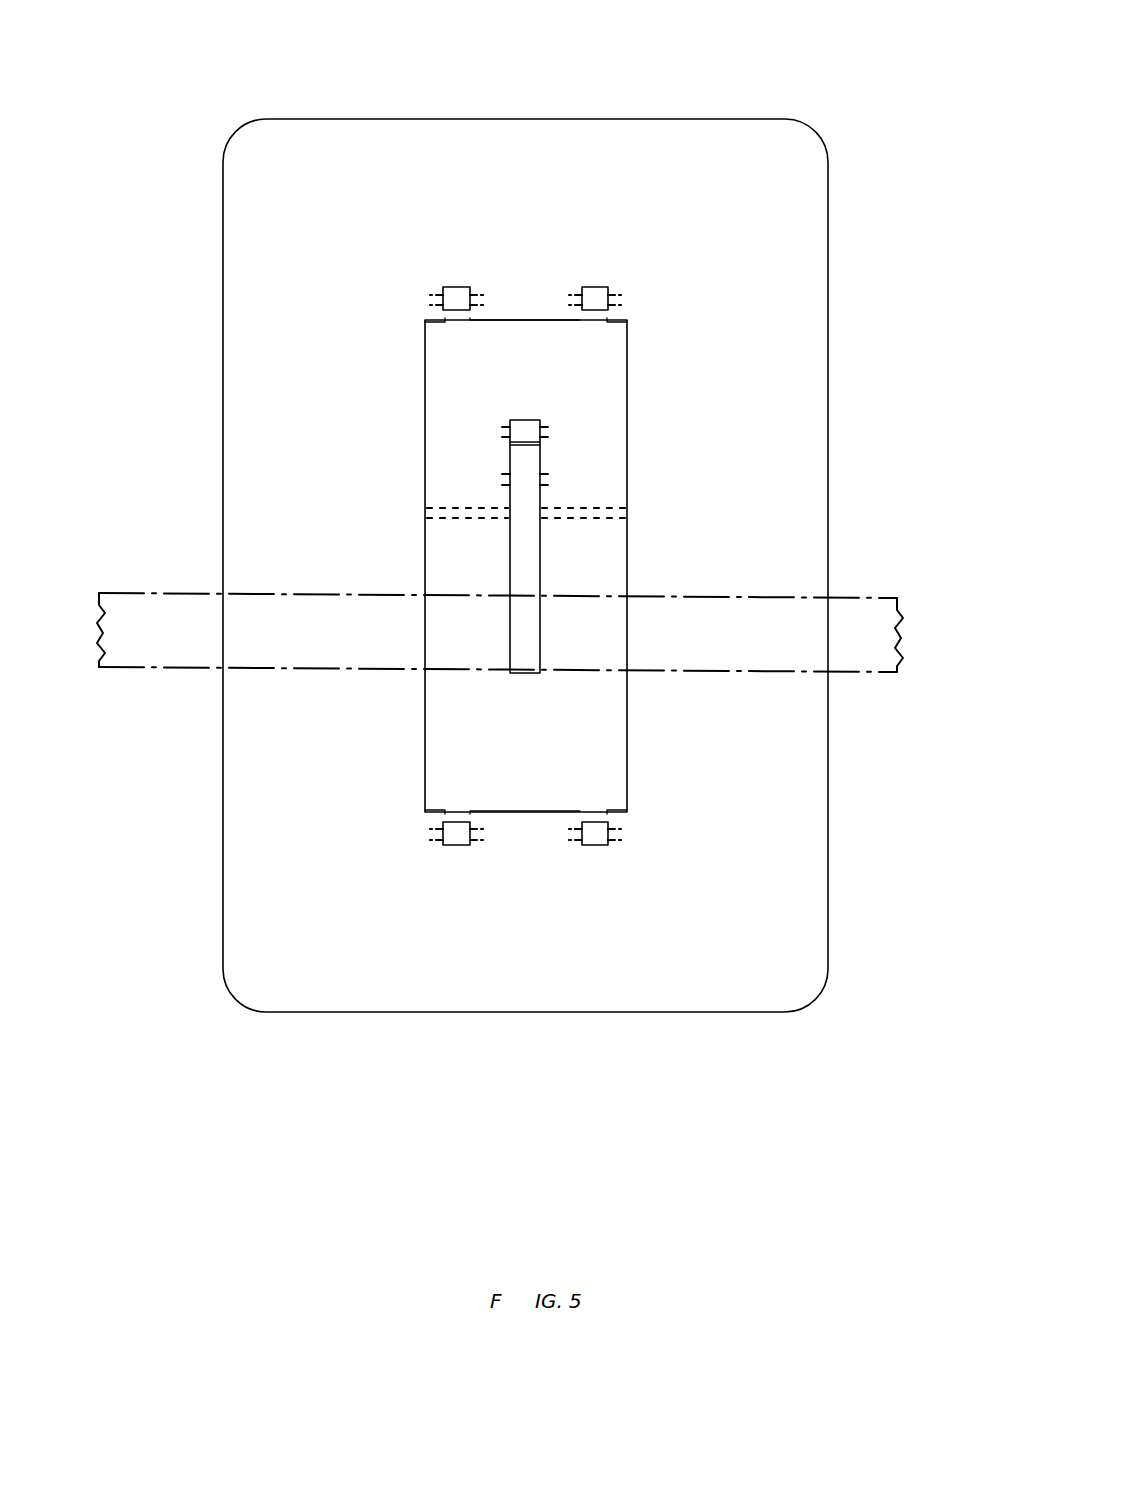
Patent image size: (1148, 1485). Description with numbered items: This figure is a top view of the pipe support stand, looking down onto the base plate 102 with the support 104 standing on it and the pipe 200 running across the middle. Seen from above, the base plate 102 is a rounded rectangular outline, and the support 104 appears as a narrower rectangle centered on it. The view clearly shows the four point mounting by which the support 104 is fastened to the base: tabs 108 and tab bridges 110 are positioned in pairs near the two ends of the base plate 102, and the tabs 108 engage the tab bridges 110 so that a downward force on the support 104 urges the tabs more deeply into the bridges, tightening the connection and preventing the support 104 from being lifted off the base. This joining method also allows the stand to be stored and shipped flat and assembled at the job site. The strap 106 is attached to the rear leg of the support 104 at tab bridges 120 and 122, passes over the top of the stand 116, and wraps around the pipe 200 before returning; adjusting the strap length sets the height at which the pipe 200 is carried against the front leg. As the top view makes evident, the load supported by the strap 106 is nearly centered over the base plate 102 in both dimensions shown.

The base plate 102 is at (582, 565).
The support 104 is at (691, 566).
The strap 106 is at (734, 546).
The tabs 108 is at (532, 572).
The tab bridges 110 is at (521, 569).
The top of the stand 116 is at (361, 444).
The tab bridge 120 is at (325, 384).
The tab bridge 122 is at (327, 335).
The pipe 200 is at (490, 606).